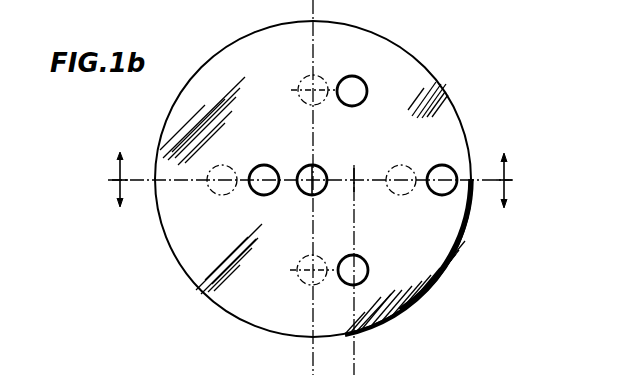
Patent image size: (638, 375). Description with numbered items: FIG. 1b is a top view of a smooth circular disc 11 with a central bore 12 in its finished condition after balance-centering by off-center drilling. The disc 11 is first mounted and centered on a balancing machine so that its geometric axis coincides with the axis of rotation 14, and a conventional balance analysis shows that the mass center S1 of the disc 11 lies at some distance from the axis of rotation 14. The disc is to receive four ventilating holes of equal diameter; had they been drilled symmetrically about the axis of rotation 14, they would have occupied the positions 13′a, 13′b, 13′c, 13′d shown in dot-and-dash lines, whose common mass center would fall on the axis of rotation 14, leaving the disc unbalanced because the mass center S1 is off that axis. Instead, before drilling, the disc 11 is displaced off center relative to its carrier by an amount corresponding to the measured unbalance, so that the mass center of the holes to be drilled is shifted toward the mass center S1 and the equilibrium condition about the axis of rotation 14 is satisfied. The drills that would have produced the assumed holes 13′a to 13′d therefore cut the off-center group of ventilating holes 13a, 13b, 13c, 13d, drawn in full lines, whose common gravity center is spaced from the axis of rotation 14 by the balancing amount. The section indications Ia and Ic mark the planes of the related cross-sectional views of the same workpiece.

The circular disc 11 is at (194, 268).
The central bore 12 is at (302, 192).
The ventilating hole 13a is at (264, 166).
The ventilating hole 13b is at (440, 195).
The ventilating hole 13c is at (368, 272).
The ventilating hole 13d is at (367, 92).
The assumed hole 13′a is at (216, 193).
The assumed hole 13′b is at (400, 166).
The assumed hole 13′c is at (297, 270).
The assumed hole 13′d is at (290, 90).
The axis of rotation 14 is at (313, 90).
The mass center of disc S1 is at (356, 184).
The section line Ia is at (311, 164).
The section line Ic is at (310, 212).